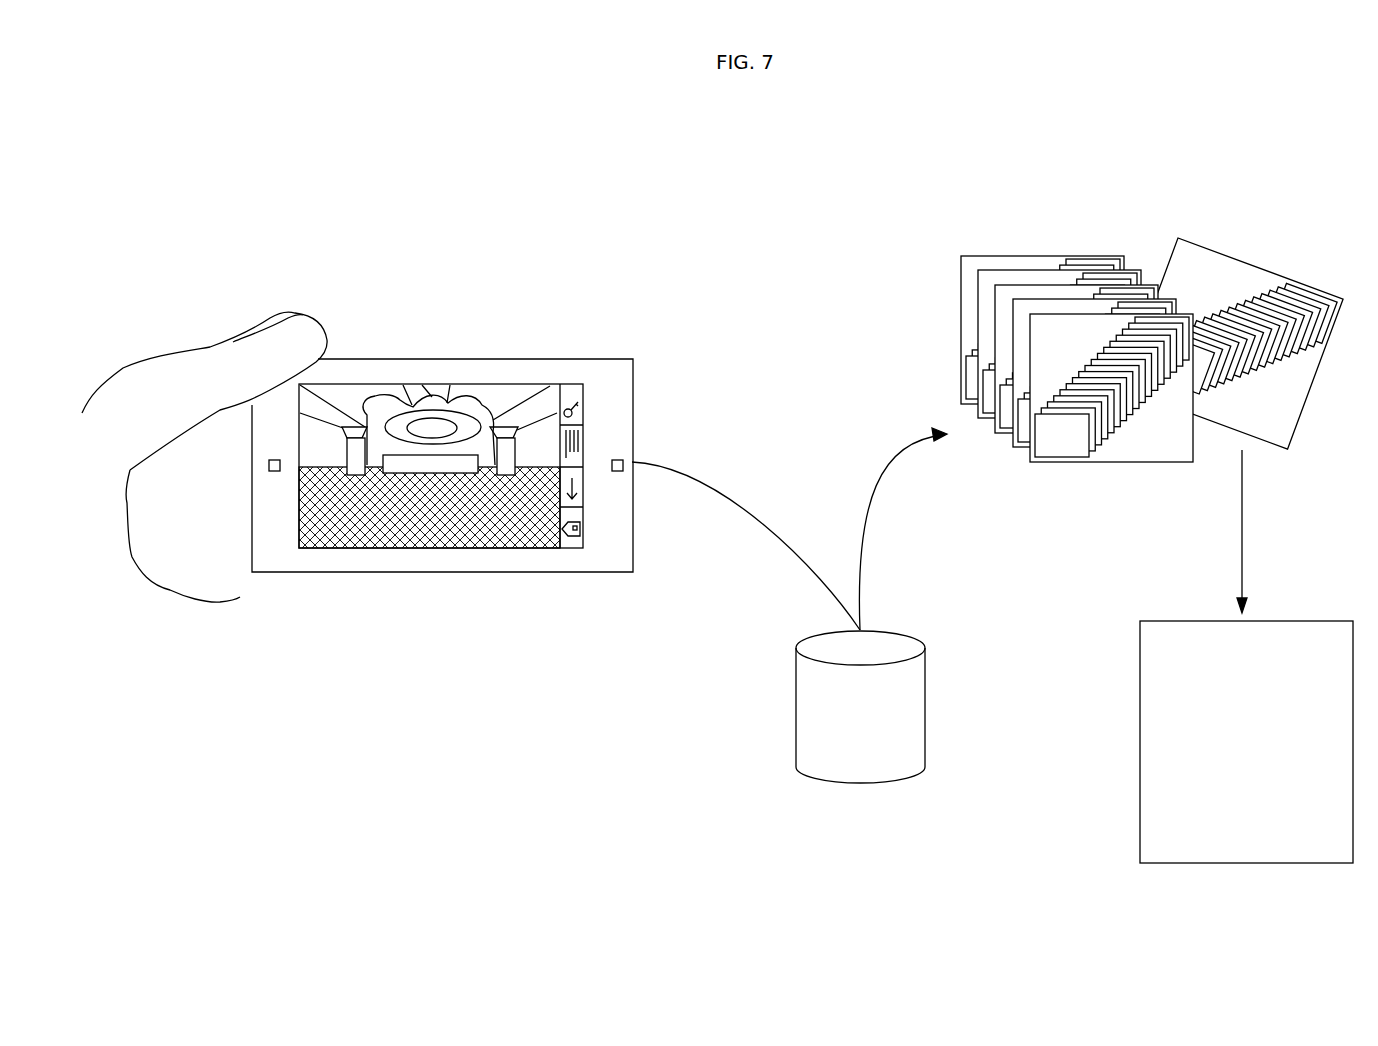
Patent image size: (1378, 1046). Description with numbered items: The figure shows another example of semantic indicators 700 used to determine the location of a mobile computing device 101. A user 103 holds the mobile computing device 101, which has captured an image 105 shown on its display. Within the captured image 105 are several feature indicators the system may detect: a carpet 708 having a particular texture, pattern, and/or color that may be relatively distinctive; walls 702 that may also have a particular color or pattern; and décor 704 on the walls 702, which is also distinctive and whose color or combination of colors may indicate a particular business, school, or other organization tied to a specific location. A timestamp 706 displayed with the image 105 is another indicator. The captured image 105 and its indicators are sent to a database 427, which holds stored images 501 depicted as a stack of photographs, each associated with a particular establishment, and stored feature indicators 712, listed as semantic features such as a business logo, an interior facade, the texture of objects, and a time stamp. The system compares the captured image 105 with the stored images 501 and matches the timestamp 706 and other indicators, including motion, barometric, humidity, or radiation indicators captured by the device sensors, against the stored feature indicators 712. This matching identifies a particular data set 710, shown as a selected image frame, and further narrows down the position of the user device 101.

The semantic indicators 700 is at (1334, 75).
The mobile computing device 101 is at (641, 417).
The user 103 is at (130, 500).
The captured image 105 is at (457, 476).
The walls 702 is at (432, 397).
The décor 704 is at (443, 420).
The timestamp 706 is at (528, 388).
The carpet 708 is at (417, 520).
The data set 710 is at (1285, 270).
The stored feature indicators 712 is at (1297, 620).
The stored images 501 is at (999, 480).
The database 427 is at (868, 782).